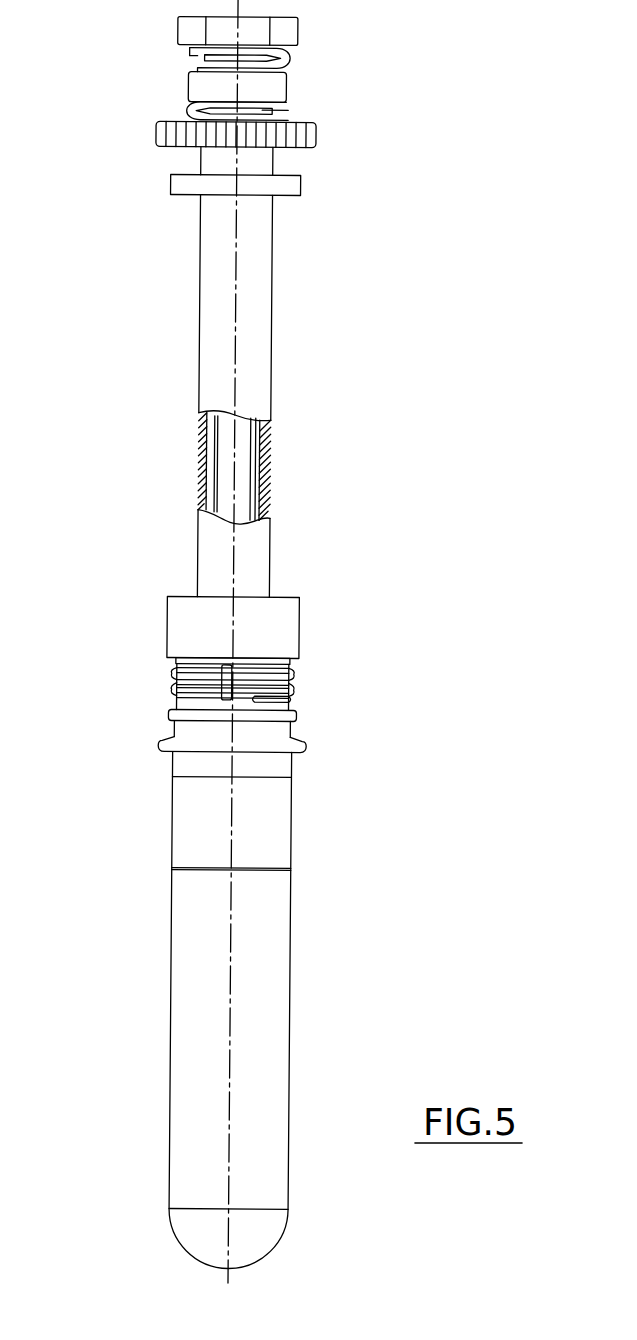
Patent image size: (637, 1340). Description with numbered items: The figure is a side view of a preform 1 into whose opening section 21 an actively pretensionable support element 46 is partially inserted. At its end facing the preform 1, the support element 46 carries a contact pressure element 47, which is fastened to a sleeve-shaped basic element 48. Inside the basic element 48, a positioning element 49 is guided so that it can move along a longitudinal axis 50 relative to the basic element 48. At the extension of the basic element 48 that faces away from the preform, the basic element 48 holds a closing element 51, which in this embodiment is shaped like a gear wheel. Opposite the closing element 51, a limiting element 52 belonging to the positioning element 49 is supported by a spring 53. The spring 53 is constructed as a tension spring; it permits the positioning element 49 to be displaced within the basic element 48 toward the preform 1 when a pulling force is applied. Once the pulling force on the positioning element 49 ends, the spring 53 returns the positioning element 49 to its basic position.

The preform 1 is at (276, 1022).
The opening section 21 is at (292, 683).
The support element 46 is at (328, 386).
The contact pressure element 47 is at (293, 628).
The basic element 48 is at (257, 297).
The positioning element 49 is at (283, 108).
The longitudinal axis 50 is at (228, 383).
The closing element 51 is at (151, 130).
The limiting element 52 is at (293, 30).
The spring 53 is at (195, 52).